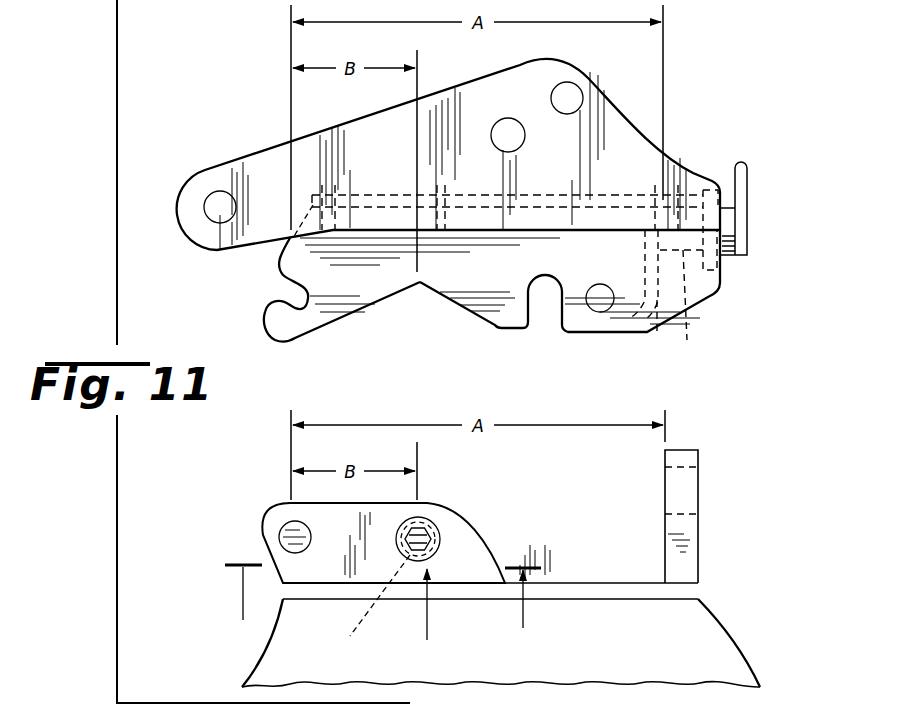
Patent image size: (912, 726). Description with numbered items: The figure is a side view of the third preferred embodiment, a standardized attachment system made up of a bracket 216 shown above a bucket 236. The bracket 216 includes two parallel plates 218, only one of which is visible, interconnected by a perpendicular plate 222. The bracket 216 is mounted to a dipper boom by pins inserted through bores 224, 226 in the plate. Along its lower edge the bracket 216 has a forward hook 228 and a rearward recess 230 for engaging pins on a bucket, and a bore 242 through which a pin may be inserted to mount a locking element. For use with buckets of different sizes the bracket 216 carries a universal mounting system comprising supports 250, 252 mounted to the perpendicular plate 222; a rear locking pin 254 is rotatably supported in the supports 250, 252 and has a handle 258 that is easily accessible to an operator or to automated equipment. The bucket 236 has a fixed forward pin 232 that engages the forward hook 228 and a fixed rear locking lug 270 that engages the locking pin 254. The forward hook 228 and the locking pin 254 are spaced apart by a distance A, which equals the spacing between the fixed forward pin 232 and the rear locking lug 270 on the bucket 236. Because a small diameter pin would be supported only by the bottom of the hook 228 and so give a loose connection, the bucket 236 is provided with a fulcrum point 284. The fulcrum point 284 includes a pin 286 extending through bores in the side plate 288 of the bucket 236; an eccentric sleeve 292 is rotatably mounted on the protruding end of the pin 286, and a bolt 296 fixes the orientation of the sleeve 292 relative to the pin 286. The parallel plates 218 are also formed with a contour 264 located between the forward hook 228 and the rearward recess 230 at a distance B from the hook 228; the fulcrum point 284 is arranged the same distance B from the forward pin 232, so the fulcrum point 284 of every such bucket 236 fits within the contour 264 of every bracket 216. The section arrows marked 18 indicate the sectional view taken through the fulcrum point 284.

The section line 18 is at (534, 565).
The bracket 216 is at (690, 171).
The parallel plates 218 is at (612, 110).
The perpendicular plate 222 is at (468, 195).
The bore 224 is at (214, 193).
The bore 226 is at (508, 118).
The forward hook 228 is at (275, 322).
The rearward recess 230 is at (560, 306).
The fixed forward pin 232 is at (278, 532).
The bucket 236 is at (725, 618).
The bore 242 is at (595, 308).
The support 250 is at (656, 340).
The support 252 is at (722, 258).
The rear locking pin 254 is at (687, 345).
The handle 258 is at (748, 190).
The contour 264 is at (418, 290).
The fixed rear locking lug 270 is at (690, 520).
The fulcrum point 284 is at (427, 620).
The pin 286 is at (366, 606).
The side plate 288 is at (305, 518).
The eccentric sleeve 292 is at (440, 536).
The bolt 296 is at (422, 522).